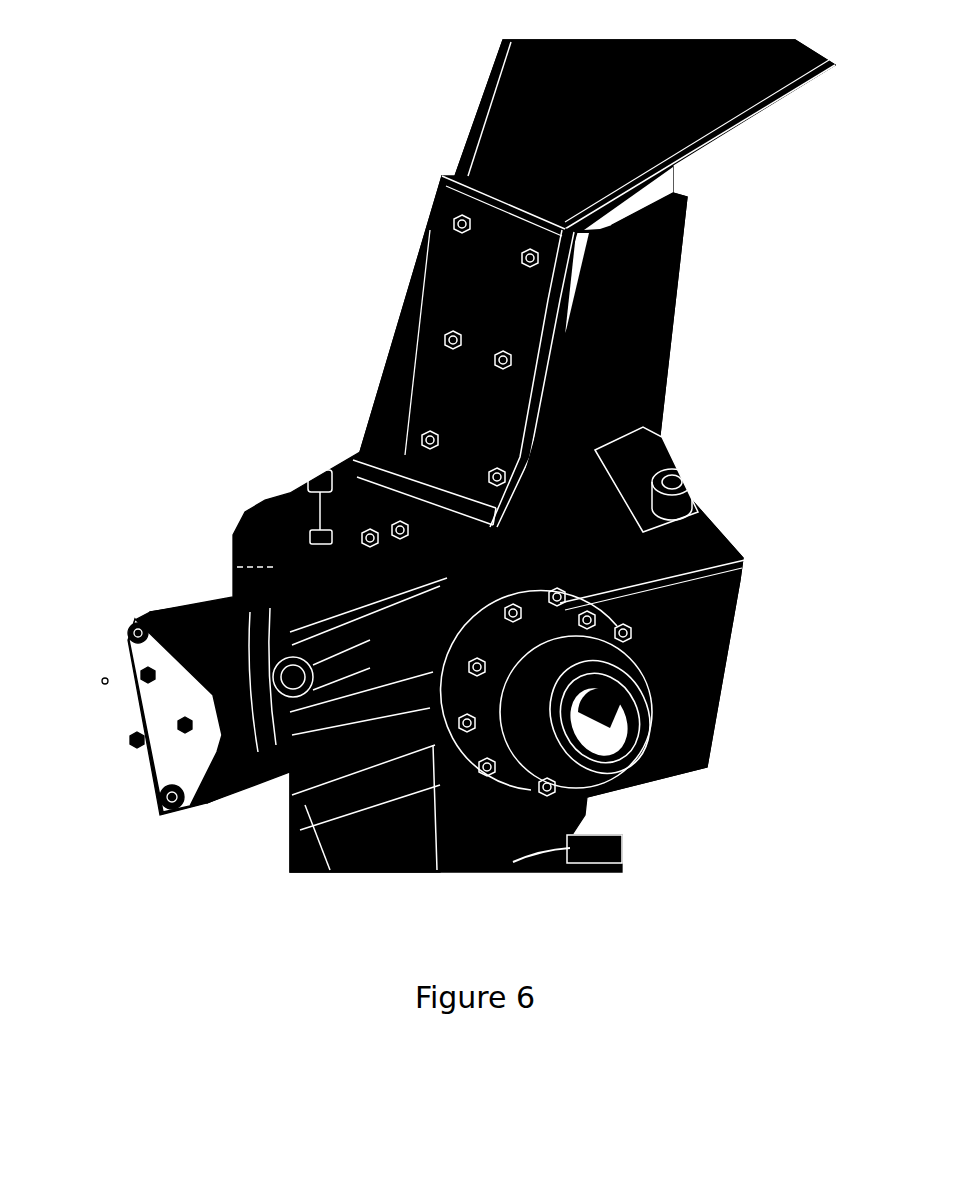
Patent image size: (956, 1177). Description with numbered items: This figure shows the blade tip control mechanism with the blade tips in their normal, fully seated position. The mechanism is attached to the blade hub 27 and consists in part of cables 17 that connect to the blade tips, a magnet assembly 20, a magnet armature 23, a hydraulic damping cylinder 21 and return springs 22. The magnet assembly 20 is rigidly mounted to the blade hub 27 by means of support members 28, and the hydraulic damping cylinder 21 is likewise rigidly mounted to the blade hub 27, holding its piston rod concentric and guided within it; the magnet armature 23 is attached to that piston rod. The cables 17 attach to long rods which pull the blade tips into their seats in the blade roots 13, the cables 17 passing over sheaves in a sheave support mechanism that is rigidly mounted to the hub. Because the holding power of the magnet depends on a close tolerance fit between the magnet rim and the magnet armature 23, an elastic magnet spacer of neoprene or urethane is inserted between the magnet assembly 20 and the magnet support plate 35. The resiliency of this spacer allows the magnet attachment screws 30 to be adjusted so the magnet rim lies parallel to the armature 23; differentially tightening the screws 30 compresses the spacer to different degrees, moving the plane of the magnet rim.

The blade roots 13 is at (645, 134).
The cables 17 is at (320, 528).
The magnet assembly 20 is at (207, 653).
The hydraulic damping cylinder 21 is at (355, 648).
The return springs 22 is at (260, 600).
The magnet armature 23 is at (223, 613).
The blade hub 27 is at (460, 313).
The support members 28 is at (587, 425).
The magnet attachment screws 30 is at (178, 722).
The magnet support plate 35 is at (160, 743).